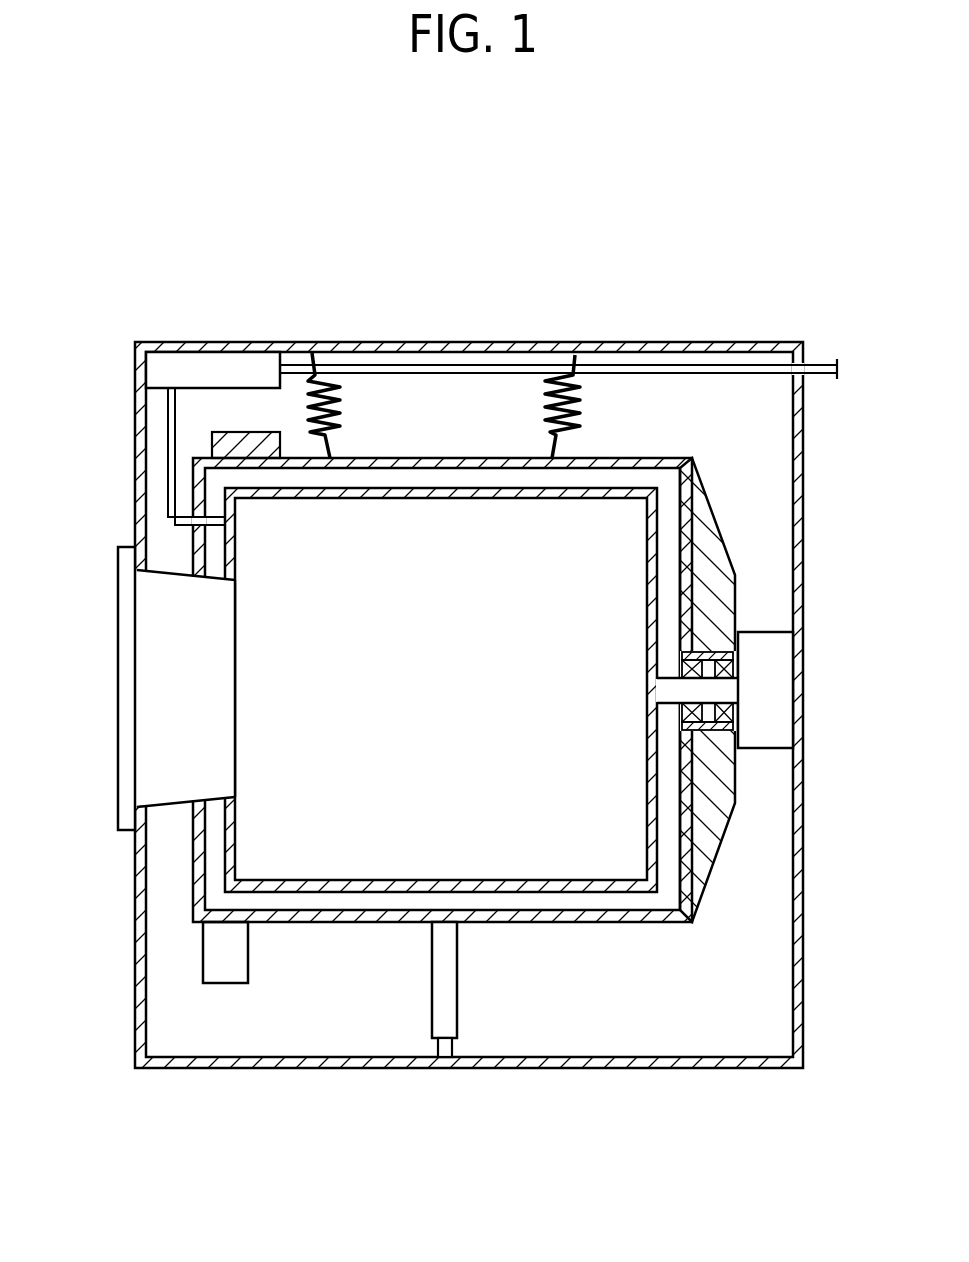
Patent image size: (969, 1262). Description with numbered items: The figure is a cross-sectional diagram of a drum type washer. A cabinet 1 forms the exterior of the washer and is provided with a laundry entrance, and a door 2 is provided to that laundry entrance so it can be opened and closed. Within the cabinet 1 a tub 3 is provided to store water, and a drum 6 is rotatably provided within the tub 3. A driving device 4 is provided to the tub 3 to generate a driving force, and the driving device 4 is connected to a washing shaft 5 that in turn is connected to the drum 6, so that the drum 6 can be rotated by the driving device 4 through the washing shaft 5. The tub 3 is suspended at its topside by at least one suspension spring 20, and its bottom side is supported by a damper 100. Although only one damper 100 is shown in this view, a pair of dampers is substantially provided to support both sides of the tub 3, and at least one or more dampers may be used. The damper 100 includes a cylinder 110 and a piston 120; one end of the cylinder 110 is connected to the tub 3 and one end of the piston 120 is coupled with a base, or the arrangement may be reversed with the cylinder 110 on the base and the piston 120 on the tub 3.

The cabinet 1 is at (793, 508).
The door 2 is at (128, 702).
The tub 3 is at (641, 458).
The driving device 4 is at (778, 700).
The washing shaft 5 is at (725, 691).
The drum 6 is at (428, 488).
The suspension spring 20 is at (342, 396).
The damper 100 is at (493, 1067).
The cylinder 110 is at (448, 978).
The piston 120 is at (449, 1091).